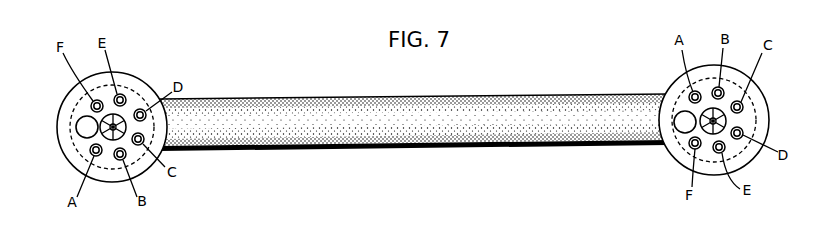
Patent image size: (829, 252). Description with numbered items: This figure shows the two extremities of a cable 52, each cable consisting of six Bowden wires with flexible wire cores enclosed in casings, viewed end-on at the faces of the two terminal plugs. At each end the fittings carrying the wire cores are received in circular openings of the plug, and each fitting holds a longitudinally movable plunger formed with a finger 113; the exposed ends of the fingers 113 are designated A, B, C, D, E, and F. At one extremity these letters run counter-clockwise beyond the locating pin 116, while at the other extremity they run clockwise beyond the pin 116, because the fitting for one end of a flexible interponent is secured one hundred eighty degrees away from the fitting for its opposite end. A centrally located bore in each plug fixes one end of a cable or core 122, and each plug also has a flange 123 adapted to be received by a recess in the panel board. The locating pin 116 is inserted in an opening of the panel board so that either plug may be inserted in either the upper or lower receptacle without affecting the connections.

The cable 52 is at (256, 112).
The finger 113 is at (122, 94).
The locating pin 116 is at (85, 128).
The cable or core 122 is at (123, 117).
The flange 123 is at (114, 180).